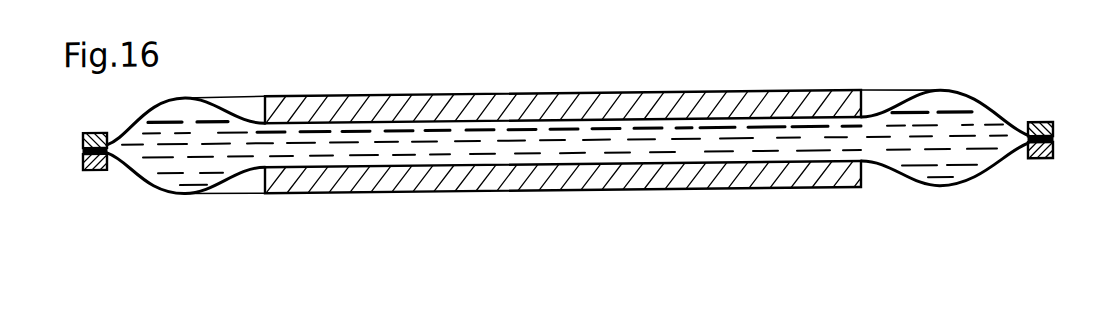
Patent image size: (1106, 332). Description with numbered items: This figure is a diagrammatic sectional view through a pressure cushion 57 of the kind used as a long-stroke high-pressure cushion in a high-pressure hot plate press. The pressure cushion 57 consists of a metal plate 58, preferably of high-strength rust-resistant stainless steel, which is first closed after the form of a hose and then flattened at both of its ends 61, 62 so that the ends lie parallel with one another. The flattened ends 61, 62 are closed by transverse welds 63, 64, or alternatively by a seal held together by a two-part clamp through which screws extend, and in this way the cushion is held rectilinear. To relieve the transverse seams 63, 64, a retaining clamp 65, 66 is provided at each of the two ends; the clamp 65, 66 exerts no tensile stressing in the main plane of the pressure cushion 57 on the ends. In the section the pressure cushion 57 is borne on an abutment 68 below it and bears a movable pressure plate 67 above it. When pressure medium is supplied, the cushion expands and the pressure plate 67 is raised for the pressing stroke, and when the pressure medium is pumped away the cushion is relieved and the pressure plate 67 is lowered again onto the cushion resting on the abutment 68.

The pressure cushion 57 is at (252, 186).
The metal plate 58 is at (203, 100).
The end of the hose shape 61 is at (1011, 171).
The end of the hose shape 62 is at (134, 180).
The weld 63 is at (1053, 150).
The weld 64 is at (83, 153).
The retaining clamp 65 is at (1048, 133).
The retaining clamp 66 is at (86, 135).
The movable pressure plate 67 is at (816, 105).
The abutment 68 is at (757, 185).